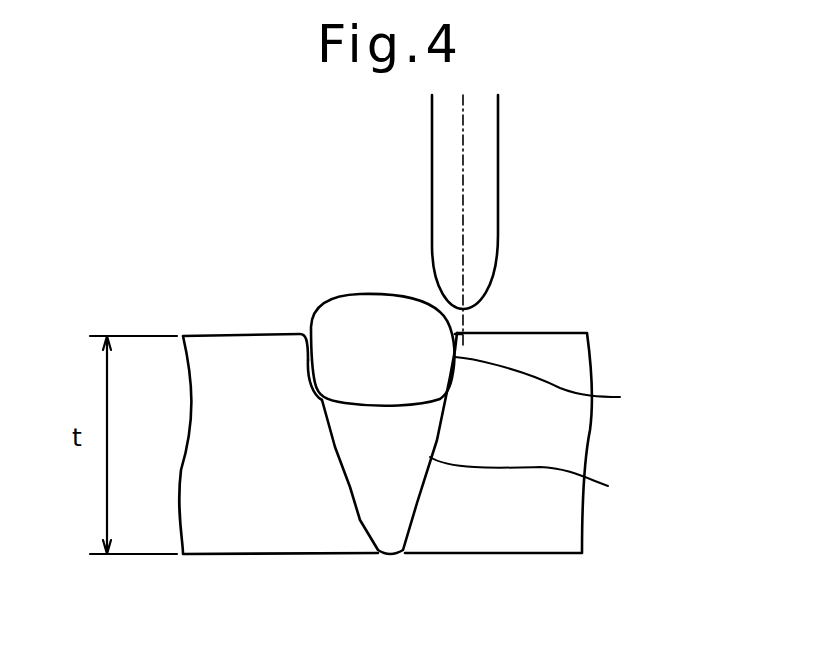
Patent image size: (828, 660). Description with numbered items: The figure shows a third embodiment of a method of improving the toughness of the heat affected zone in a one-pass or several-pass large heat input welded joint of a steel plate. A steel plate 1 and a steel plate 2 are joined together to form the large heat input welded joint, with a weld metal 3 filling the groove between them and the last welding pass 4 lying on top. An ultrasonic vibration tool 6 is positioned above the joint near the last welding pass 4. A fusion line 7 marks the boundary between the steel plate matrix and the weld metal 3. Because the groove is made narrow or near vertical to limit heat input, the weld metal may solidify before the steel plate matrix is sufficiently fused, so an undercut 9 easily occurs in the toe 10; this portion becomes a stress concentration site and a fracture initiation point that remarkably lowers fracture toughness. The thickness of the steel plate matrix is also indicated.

The steel plate 1 is at (263, 342).
The steel plate 2 is at (492, 538).
The weld metal 3 is at (340, 485).
The last welding pass 4 is at (413, 323).
The ultrasonic vibration tool 6 is at (483, 170).
The fusion line 7 is at (530, 480).
The undercut 9 is at (549, 385).
The toe 10 is at (456, 329).